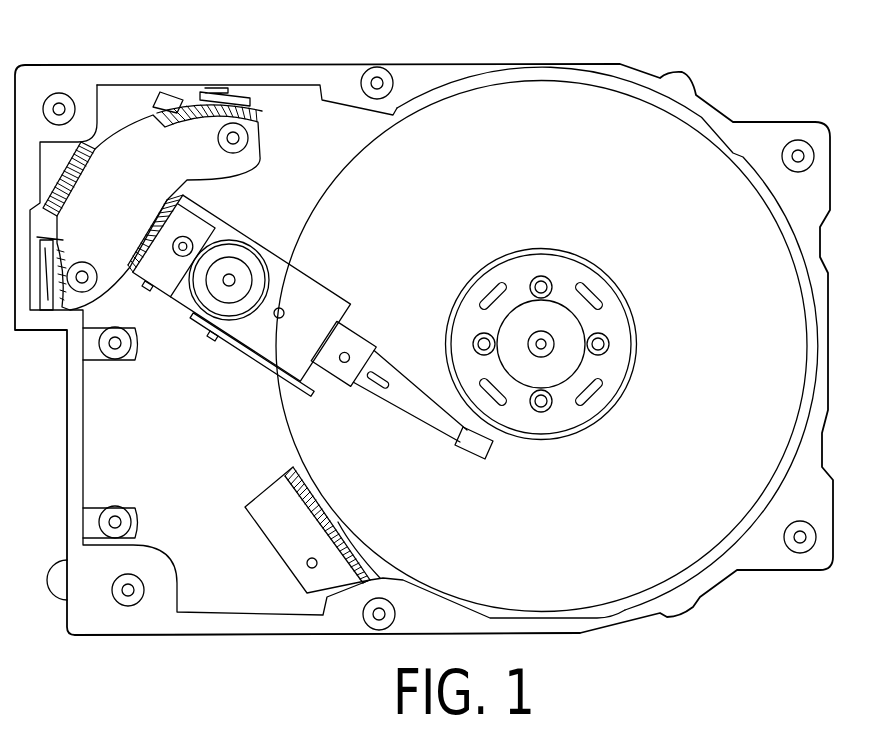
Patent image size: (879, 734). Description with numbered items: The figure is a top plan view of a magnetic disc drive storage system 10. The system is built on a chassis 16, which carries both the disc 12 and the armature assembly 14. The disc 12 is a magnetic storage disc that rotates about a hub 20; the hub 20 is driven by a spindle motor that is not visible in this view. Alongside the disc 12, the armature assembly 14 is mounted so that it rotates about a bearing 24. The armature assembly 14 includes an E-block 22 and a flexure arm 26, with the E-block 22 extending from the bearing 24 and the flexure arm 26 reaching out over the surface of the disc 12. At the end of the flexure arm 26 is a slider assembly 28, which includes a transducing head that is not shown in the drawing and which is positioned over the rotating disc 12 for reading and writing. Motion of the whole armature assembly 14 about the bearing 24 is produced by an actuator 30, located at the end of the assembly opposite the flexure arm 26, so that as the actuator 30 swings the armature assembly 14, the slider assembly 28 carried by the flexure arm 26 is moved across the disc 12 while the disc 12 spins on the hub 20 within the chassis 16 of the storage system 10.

The magnetic disc drive storage system 10 is at (733, 595).
The disc 12 is at (607, 580).
The armature assembly 14 is at (218, 343).
The chassis 16 is at (220, 624).
The hub 20 is at (472, 318).
The E-block 22 is at (287, 284).
The bearing 24 is at (232, 252).
The flexure arm 26 is at (379, 396).
The slider assembly 28 is at (480, 459).
The actuator 30 is at (113, 168).